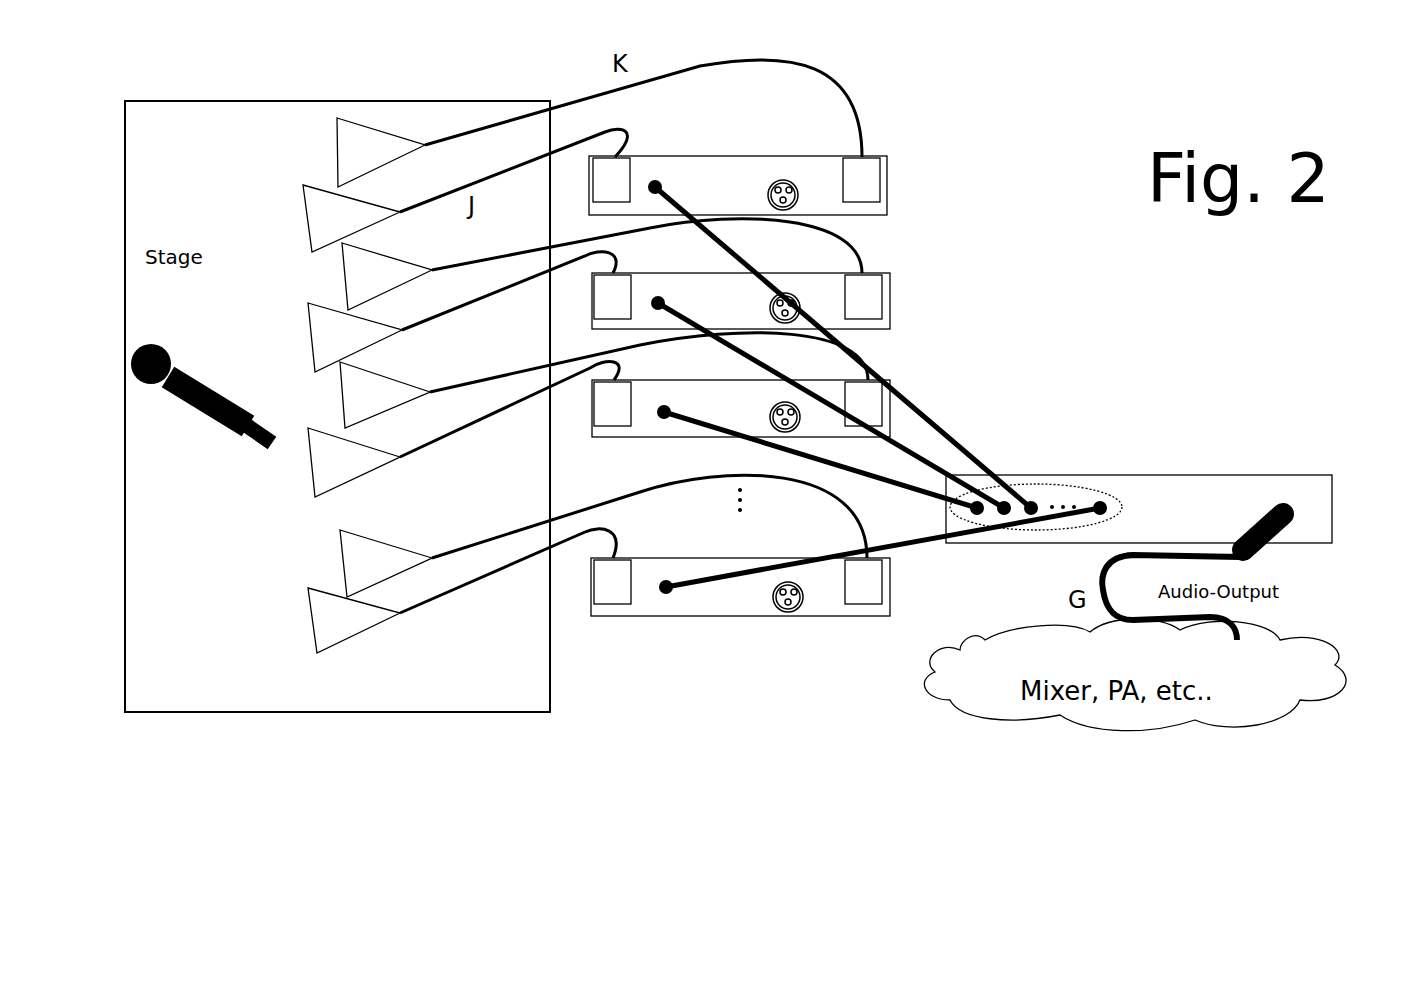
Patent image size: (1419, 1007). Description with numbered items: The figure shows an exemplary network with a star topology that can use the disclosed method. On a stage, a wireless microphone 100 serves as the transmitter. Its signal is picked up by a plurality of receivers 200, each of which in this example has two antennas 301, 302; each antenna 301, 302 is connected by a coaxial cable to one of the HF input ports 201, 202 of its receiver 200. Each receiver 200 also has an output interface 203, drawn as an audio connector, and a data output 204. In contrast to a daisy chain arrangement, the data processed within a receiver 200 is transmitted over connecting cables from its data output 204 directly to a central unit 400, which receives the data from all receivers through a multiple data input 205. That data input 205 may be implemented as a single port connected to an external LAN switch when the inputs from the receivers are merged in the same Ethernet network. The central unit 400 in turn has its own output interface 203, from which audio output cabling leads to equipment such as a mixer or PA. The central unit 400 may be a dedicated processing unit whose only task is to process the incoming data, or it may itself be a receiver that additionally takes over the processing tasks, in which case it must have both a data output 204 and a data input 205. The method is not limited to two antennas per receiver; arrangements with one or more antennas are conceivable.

The wireless microphone 100 is at (207, 417).
The receiver 200 is at (887, 605).
The HF input port 201 is at (625, 150).
The HF input port 202 is at (870, 190).
The output interface 203 is at (788, 180).
The data output 204 is at (657, 178).
The multiple data input 205 is at (1027, 485).
The antenna 301 is at (303, 185).
The antenna 302 is at (337, 118).
The central unit 400 is at (1205, 500).